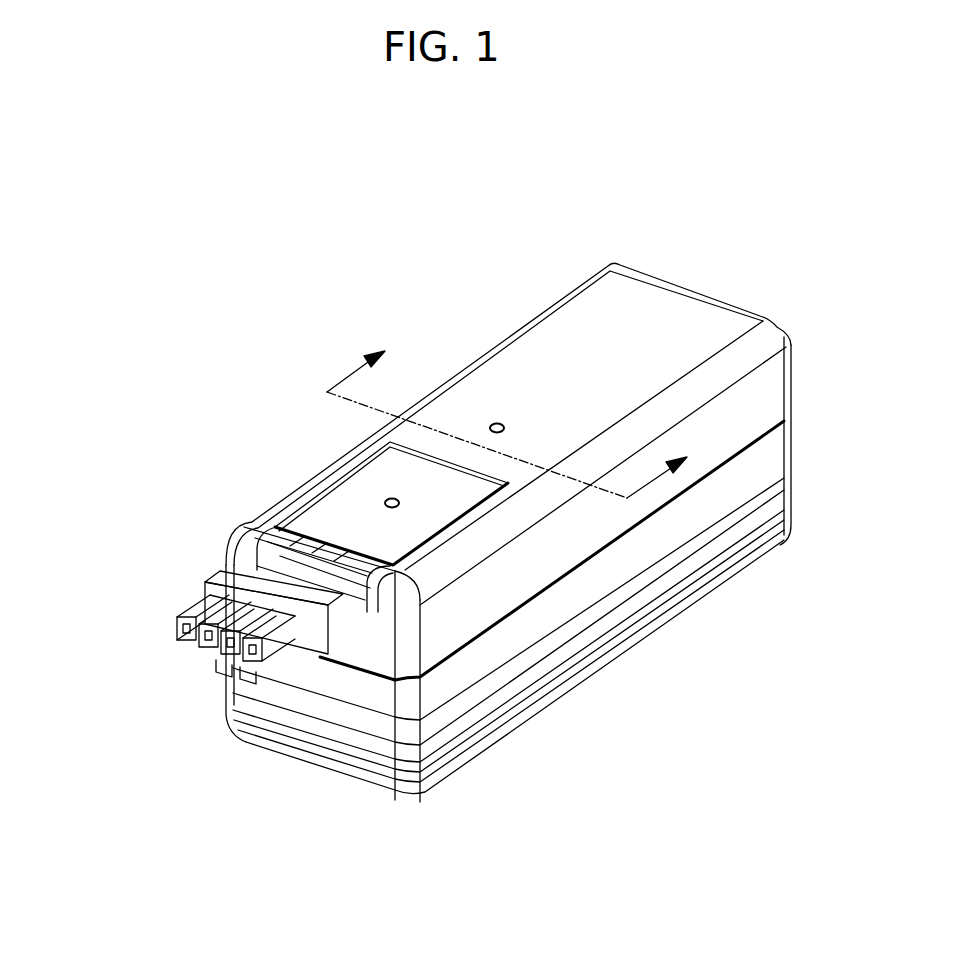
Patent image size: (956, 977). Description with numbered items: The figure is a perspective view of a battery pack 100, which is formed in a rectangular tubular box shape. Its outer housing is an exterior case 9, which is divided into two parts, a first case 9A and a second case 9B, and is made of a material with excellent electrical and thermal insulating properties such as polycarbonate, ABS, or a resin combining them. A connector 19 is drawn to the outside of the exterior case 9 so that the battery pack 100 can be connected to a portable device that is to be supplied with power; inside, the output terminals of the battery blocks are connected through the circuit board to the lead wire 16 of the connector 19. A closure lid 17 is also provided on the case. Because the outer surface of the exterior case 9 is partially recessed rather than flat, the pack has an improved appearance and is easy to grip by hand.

The battery pack 100 is at (257, 277).
The exterior case 9 is at (688, 780).
The first case 9A is at (643, 553).
The second case 9B is at (577, 678).
The lead wire 16 is at (374, 605).
The closure lid 17 is at (345, 503).
The connector 19 is at (184, 567).